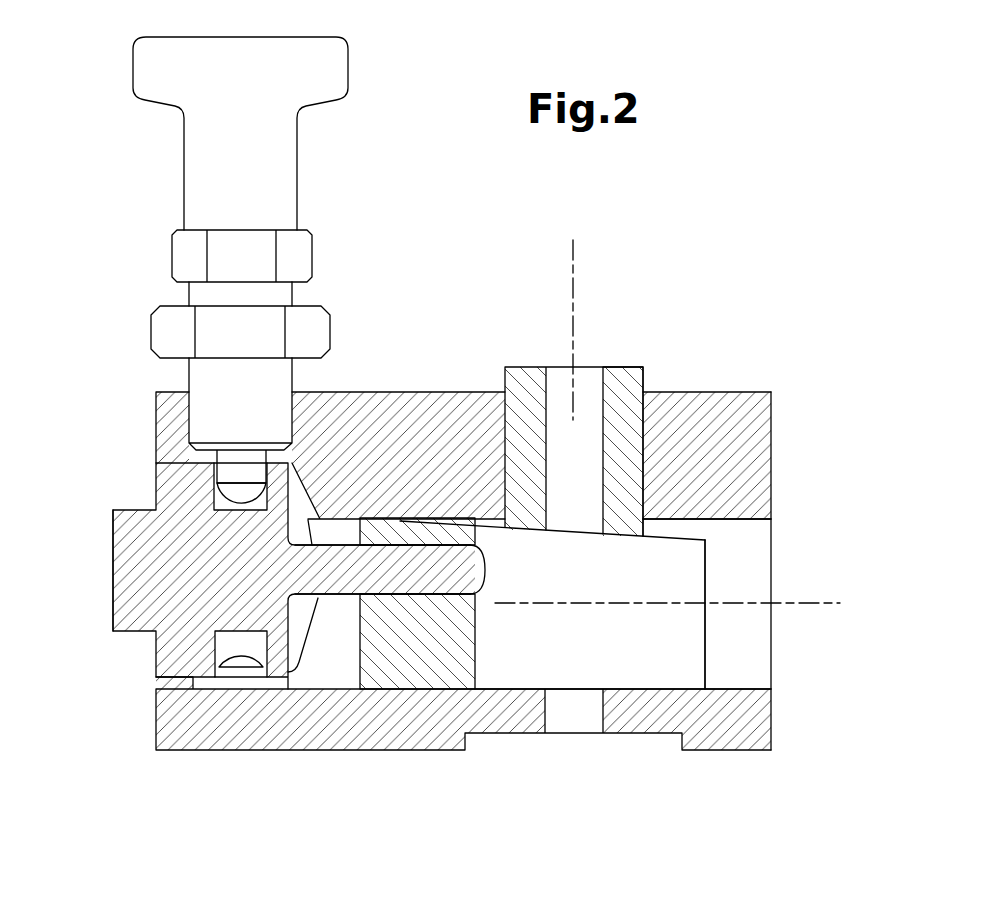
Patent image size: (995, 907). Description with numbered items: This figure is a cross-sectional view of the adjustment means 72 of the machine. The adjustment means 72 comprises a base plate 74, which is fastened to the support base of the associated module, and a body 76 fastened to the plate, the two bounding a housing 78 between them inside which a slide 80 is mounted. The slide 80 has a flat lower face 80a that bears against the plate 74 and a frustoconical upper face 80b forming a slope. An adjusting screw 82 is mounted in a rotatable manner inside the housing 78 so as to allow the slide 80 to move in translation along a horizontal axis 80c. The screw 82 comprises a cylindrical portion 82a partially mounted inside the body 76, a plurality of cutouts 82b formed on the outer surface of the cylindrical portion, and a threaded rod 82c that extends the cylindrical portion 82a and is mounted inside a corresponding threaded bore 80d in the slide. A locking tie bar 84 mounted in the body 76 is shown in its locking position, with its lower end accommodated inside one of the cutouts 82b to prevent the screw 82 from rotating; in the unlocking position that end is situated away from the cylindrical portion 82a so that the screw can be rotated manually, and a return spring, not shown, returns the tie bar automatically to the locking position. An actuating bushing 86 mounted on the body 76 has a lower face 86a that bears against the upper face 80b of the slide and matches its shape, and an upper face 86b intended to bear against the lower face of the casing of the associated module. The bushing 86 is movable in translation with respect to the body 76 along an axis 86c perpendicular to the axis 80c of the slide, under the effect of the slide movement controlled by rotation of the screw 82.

The adjustment means 72 is at (802, 406).
The base plate 74 is at (345, 735).
The body 76 is at (374, 425).
The housing 78 is at (742, 520).
The slide 80 is at (428, 658).
The flat lower face 80a is at (647, 690).
The frustoconical upper face 80b is at (682, 537).
The horizontal axis 80c is at (835, 604).
The threaded bore 80d is at (486, 573).
The adjusting screw 82 is at (140, 560).
The cylindrical portion 82a is at (187, 618).
The cutouts 82b is at (238, 505).
The threaded rod 82c is at (383, 567).
The locking tie bar 84 is at (198, 163).
The actuating bushing 86 is at (529, 391).
The lower face 86a is at (618, 536).
The upper face 86b is at (623, 367).
The axis 86c is at (575, 275).